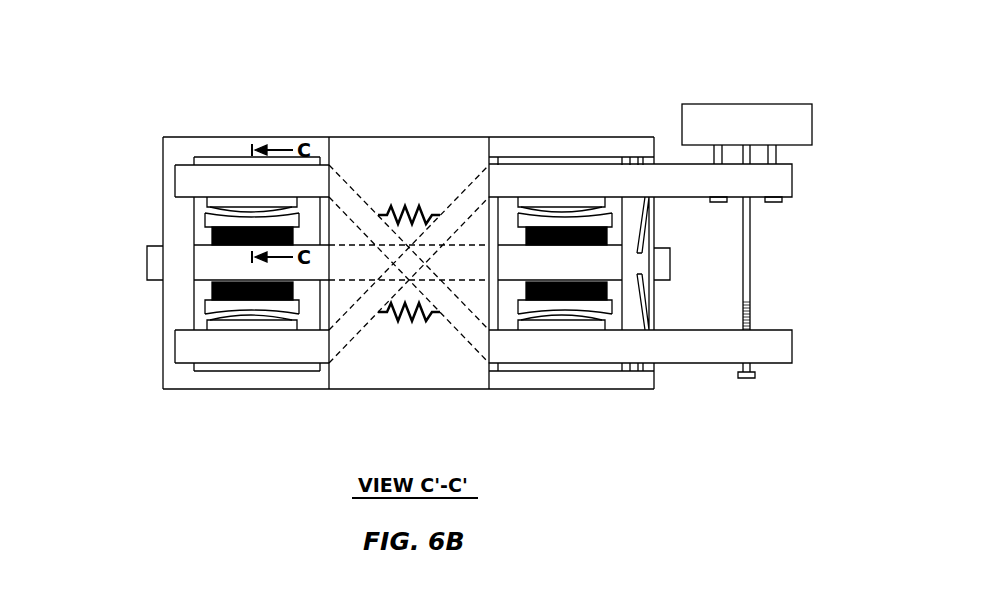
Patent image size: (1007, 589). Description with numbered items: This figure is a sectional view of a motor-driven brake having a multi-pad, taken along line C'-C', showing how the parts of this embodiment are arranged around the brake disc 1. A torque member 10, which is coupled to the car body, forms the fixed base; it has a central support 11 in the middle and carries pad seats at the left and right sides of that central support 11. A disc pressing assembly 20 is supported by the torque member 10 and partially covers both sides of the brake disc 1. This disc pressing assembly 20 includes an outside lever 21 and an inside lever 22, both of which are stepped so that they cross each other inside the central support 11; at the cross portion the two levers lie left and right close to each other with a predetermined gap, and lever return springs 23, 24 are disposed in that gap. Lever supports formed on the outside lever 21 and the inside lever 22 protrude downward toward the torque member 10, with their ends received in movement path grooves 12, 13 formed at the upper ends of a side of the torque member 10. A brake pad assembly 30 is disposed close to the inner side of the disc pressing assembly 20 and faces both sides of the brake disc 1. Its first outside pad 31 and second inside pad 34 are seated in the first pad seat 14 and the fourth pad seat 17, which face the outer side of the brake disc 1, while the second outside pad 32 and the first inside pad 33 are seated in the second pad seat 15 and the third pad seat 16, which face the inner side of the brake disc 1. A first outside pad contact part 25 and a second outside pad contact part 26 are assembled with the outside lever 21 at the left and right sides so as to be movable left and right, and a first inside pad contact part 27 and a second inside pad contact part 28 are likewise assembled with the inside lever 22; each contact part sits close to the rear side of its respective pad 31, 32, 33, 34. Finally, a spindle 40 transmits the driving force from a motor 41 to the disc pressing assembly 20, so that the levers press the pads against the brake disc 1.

The brake disc 1 is at (647, 310).
The torque member 10 is at (509, 382).
The central support 11 is at (375, 373).
The movement path groove 12 is at (663, 263).
The movement path groove 13 is at (643, 223).
The first pad seat 14 is at (617, 327).
The second pad seat 15 is at (308, 203).
The third pad seat 16 is at (508, 205).
The fourth pad seat 17 is at (201, 321).
The disc pressing assembly 20 is at (179, 264).
The outside lever 21 is at (183, 182).
The inside lever 22 is at (183, 348).
The lever return spring 23 is at (408, 327).
The lever return spring 24 is at (400, 202).
The first outside pad contact part 25 is at (552, 320).
The second outside pad contact part 26 is at (237, 220).
The first inside pad contact part 27 is at (583, 212).
The second inside pad contact part 28 is at (240, 317).
The brake pad assembly 30 is at (392, 261).
The first outside pad 31 is at (583, 313).
The second outside pad 32 is at (237, 212).
The first inside pad 33 is at (528, 213).
The second inside pad 34 is at (277, 305).
The spindle 40 is at (747, 268).
The motor 41 is at (707, 104).